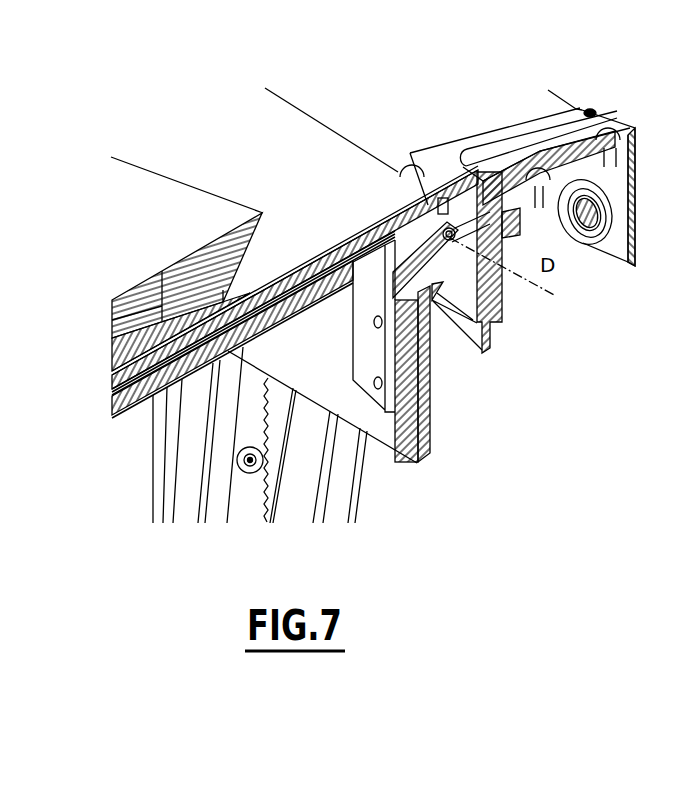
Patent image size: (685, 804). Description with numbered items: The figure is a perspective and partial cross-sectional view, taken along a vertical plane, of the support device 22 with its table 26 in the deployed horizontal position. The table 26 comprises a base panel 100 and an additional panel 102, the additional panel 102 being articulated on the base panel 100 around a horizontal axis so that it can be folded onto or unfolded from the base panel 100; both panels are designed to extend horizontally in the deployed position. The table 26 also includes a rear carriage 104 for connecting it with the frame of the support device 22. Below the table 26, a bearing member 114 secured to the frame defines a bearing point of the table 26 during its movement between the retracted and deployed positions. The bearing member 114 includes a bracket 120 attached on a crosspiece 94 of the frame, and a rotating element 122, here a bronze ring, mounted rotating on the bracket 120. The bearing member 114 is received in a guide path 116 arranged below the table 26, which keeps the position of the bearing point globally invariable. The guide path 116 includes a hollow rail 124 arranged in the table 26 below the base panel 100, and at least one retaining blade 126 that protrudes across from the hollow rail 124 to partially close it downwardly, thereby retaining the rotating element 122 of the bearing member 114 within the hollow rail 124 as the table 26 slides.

The support device 22 is at (0, 118).
The table 26 is at (167, 200).
The crosspiece 94 is at (400, 450).
The base panel 100 is at (112, 378).
The additional panel 102 is at (112, 312).
The rear carriage 104 is at (620, 212).
The bearing member 114 is at (332, 336).
The guide path 116 is at (96, 408).
The bracket 120 is at (367, 367).
The rotating element 122 is at (400, 207).
The hollow rail 124 is at (300, 266).
The retaining blade 126 is at (172, 403).